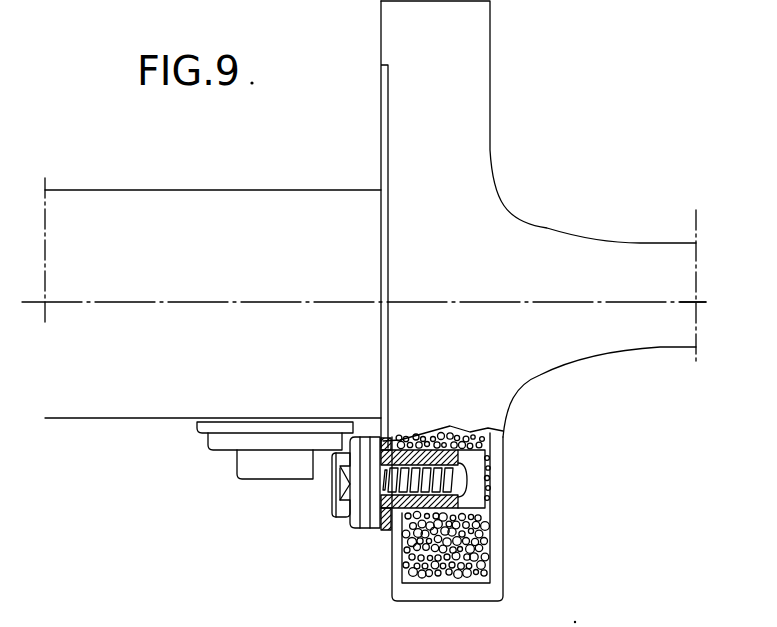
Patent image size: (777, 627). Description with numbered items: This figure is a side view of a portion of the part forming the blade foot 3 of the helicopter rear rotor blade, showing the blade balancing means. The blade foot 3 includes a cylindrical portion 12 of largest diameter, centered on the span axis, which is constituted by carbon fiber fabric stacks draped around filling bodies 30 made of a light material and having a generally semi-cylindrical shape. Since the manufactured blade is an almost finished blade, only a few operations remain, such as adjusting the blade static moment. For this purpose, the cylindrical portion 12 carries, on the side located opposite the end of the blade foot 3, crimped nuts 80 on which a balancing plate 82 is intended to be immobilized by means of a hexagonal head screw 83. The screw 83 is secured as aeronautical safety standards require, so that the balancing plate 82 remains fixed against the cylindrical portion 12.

The blade foot 3 is at (218, 486).
The hexagonal head screw 83 is at (342, 508).
The balancing plate 82 is at (360, 517).
The crimped nut 80 is at (398, 513).
The filling body 30 is at (487, 540).
The cylindrical portion 12 is at (480, 598).